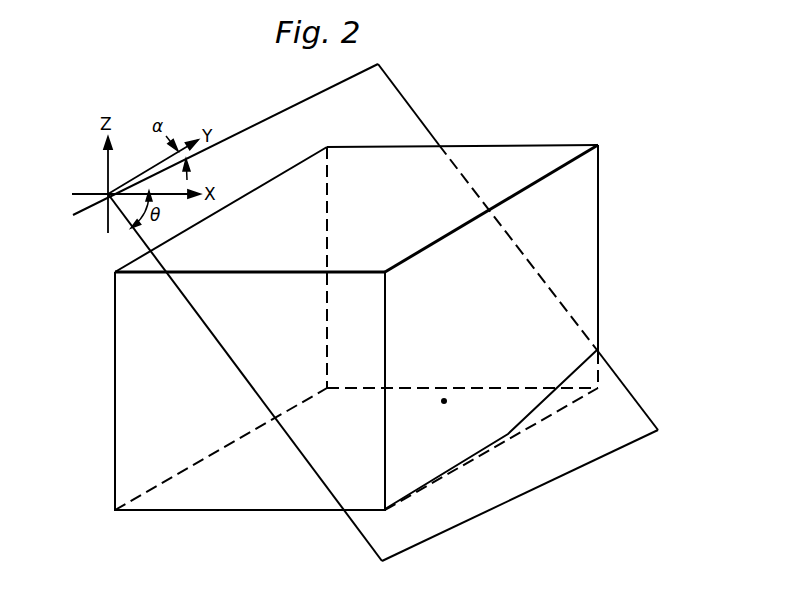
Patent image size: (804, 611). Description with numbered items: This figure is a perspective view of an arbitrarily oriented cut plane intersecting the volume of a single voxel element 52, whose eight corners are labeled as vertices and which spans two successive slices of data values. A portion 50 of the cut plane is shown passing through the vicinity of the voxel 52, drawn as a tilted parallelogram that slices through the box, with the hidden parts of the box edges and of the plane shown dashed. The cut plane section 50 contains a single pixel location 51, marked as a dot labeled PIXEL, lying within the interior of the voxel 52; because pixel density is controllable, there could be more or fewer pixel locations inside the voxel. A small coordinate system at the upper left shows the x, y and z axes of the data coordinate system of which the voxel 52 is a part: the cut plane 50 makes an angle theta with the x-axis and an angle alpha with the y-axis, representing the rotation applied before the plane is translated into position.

The cut plane section 50 is at (386, 114).
The pixel location 51 is at (447, 394).
The voxel element 52 is at (571, 245).